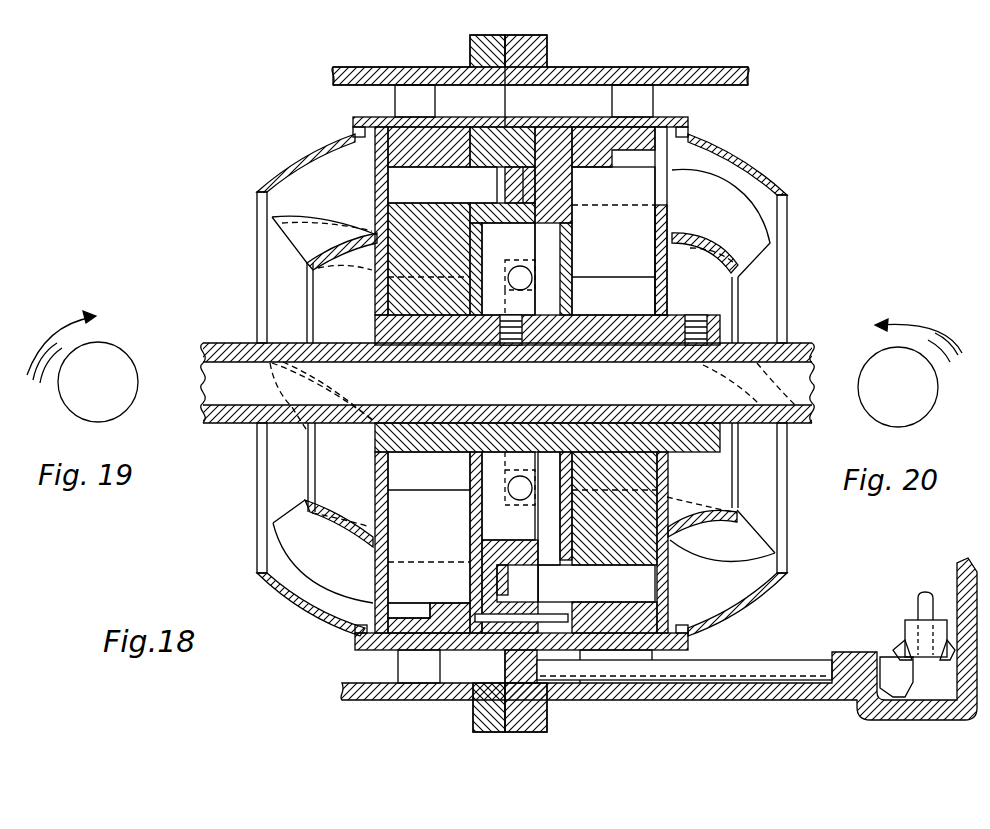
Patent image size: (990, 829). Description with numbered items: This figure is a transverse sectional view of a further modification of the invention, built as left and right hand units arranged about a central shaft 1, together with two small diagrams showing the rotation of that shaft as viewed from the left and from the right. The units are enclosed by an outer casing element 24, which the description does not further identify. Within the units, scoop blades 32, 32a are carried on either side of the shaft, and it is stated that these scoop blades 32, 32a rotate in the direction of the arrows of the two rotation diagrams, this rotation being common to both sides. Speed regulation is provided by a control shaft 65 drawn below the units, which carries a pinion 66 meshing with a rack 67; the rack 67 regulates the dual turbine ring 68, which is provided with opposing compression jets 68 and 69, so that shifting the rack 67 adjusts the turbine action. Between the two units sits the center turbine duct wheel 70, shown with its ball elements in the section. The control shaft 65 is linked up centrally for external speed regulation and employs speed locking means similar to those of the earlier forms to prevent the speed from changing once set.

The shaft 1 is at (222, 343).
The housing shell 24 is at (660, 172).
The scoop blade 32 is at (282, 244).
The scoop blade 32a is at (758, 262).
The control shaft 65 is at (767, 660).
The pinion 66 is at (527, 685).
The rack 67 is at (505, 660).
The dual turbine ring 68 is at (492, 185).
The compression jet 69 is at (558, 585).
The center turbine duct wheel 70 is at (482, 248).